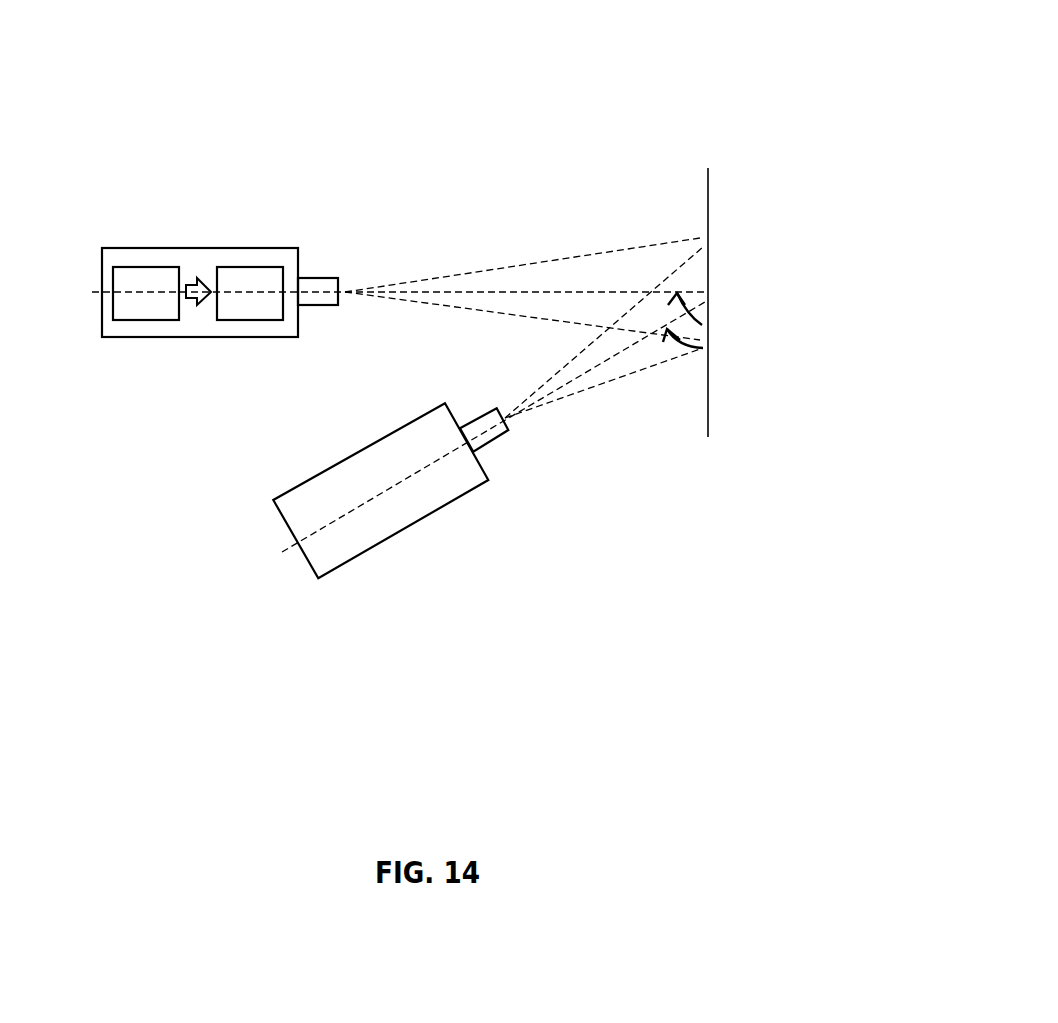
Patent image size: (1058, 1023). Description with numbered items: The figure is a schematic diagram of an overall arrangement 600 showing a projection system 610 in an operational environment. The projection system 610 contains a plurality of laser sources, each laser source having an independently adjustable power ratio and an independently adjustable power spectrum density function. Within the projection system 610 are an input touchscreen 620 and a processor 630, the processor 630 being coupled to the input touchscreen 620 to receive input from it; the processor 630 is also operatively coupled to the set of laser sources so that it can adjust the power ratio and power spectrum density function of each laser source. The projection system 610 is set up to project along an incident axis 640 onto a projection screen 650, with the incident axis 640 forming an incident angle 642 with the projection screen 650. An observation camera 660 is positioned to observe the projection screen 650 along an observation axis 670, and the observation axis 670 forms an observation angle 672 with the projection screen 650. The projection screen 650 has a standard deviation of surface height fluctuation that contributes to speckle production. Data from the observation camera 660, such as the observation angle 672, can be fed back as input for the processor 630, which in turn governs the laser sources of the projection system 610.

The optical system 600 is at (721, 83).
The projection system 610 is at (132, 248).
The input touchscreen 620 is at (180, 270).
The processor 630 is at (290, 270).
The incident axis 640 is at (497, 292).
The projection screen 650 is at (707, 182).
The incident angle 642 is at (708, 314).
The observation camera 660 is at (338, 465).
The observation axis 670 is at (562, 385).
The observation angle 672 is at (708, 357).